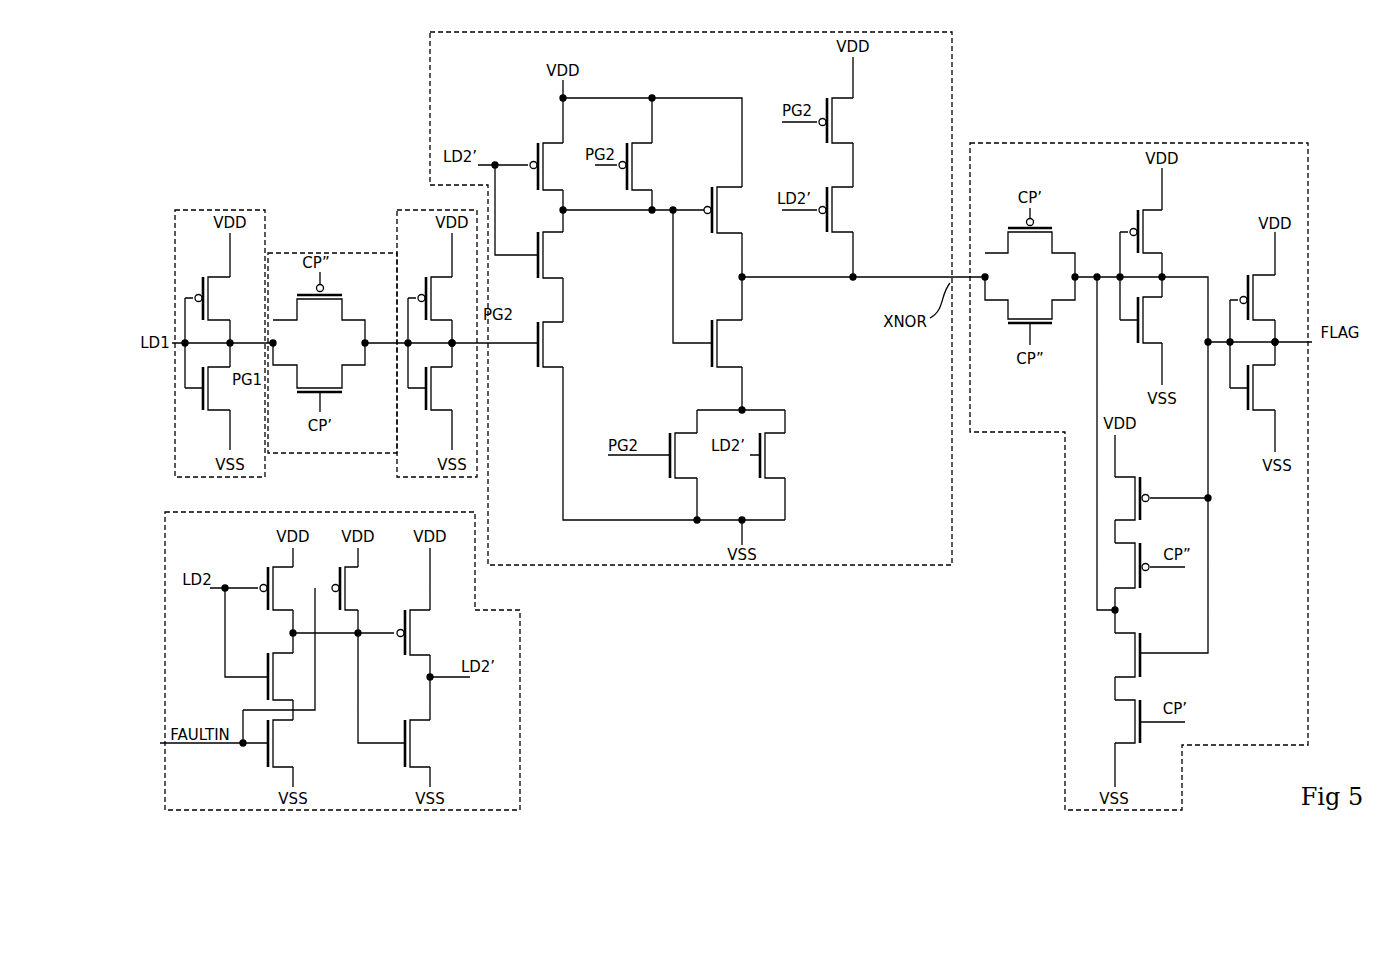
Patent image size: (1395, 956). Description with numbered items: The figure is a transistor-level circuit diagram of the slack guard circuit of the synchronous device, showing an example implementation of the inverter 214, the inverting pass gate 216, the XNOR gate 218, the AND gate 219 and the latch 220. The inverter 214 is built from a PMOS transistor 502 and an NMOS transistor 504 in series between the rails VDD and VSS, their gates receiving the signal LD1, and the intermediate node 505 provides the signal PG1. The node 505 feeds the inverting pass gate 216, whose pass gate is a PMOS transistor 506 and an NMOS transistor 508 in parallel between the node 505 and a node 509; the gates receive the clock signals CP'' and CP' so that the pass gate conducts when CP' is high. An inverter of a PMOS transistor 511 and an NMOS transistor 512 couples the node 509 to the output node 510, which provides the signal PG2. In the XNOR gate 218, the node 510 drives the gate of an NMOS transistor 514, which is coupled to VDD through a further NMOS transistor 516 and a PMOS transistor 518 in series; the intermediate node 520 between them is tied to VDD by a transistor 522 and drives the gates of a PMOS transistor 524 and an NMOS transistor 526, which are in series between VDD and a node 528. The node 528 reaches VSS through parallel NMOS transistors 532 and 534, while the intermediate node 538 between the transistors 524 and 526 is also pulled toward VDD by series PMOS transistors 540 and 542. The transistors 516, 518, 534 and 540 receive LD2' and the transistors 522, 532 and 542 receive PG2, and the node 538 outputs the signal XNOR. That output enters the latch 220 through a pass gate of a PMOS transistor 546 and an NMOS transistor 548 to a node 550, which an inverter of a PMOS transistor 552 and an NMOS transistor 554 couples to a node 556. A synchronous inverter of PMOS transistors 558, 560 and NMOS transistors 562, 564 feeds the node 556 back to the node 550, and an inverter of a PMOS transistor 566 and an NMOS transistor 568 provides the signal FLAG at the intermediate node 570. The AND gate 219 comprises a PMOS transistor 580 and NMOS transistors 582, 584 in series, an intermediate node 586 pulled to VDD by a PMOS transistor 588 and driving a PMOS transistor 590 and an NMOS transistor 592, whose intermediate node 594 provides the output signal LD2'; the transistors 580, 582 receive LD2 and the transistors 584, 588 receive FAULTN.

The inverter 214 is at (268, 221).
The inverting pass gate 216 is at (348, 253).
The XNOR gate 218 is at (945, 72).
The AND gate 219 is at (500, 612).
The latch 220 is at (1066, 143).
The PMOS transistor 502 is at (214, 300).
The NMOS transistor 504 is at (217, 389).
The intermediate node 505 is at (240, 366).
The PMOS transistor 506 is at (342, 299).
The NMOS transistor 508 is at (343, 377).
The node 509 is at (367, 337).
The output node 510 is at (454, 338).
The PMOS transistor 511 is at (433, 297).
The NMOS transistor 512 is at (433, 393).
The NMOS transistor 514 is at (553, 343).
The NMOS transistor 516 is at (553, 258).
The PMOS transistor 518 is at (553, 157).
The intermediate node 520 is at (567, 210).
The transistor 522 is at (634, 166).
The PMOS transistor 524 is at (736, 205).
The NMOS transistor 526 is at (726, 343).
The node 528 is at (748, 407).
The NMOS transistor 532 is at (678, 458).
The NMOS transistor 534 is at (771, 459).
The intermediate node 538 is at (748, 272).
The PMOS transistor 540 is at (841, 214).
The PMOS transistor 542 is at (841, 128).
The PMOS transistor 546 is at (1060, 238).
The NMOS transistor 548 is at (1060, 308).
The node 550 is at (1097, 270).
The PMOS transistor 552 is at (1148, 232).
The NMOS transistor 554 is at (1148, 323).
The node 556 is at (1167, 272).
The PMOS transistor 558 is at (1127, 469).
The PMOS transistor 560 is at (1132, 538).
The NMOS transistor 562 is at (1132, 628).
The NMOS transistor 564 is at (1128, 694).
The PMOS transistor 566 is at (1258, 304).
The NMOS transistor 568 is at (1258, 389).
The intermediate node 570 is at (1268, 348).
The PMOS transistor 580 is at (278, 587).
The NMOS transistor 582 is at (278, 686).
The NMOS transistor 584 is at (276, 741).
The intermediate node 586 is at (288, 634).
The PMOS transistor 588 is at (348, 588).
The PMOS transistor 590 is at (417, 638).
The NMOS transistor 592 is at (417, 744).
The intermediate node 594 is at (424, 679).